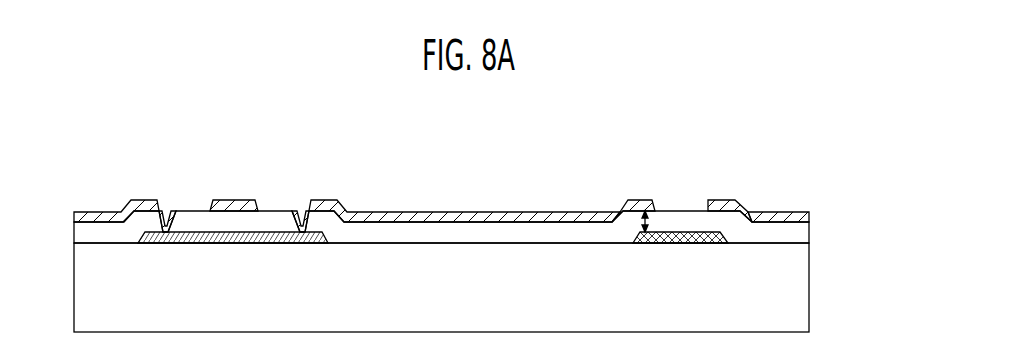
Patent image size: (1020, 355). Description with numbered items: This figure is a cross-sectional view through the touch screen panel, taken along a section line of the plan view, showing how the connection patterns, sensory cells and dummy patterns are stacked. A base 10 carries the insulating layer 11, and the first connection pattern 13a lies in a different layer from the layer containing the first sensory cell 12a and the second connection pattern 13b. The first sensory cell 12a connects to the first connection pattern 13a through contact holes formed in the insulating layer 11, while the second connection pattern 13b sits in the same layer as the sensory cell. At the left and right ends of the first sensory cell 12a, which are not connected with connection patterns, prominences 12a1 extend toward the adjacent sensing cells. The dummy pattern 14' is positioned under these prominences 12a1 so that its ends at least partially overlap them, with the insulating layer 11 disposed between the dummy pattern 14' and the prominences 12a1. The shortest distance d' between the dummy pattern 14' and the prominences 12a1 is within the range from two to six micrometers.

The substrate 10 is at (809, 286).
The insulating layer 11 is at (809, 231).
The first sensory cell 12a is at (93, 218).
The prominence 12a1 is at (639, 207).
The first connection pattern 13a is at (266, 241).
The second connection pattern 13b is at (232, 201).
The dummy pattern 14' is at (680, 190).
The shortest distance d' is at (626, 188).